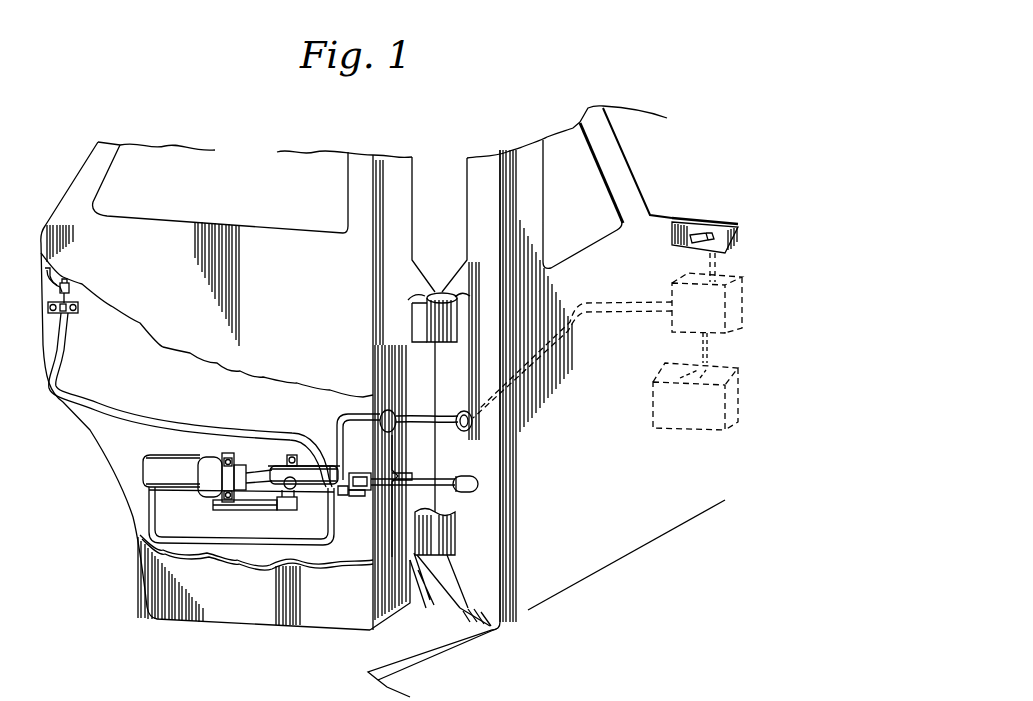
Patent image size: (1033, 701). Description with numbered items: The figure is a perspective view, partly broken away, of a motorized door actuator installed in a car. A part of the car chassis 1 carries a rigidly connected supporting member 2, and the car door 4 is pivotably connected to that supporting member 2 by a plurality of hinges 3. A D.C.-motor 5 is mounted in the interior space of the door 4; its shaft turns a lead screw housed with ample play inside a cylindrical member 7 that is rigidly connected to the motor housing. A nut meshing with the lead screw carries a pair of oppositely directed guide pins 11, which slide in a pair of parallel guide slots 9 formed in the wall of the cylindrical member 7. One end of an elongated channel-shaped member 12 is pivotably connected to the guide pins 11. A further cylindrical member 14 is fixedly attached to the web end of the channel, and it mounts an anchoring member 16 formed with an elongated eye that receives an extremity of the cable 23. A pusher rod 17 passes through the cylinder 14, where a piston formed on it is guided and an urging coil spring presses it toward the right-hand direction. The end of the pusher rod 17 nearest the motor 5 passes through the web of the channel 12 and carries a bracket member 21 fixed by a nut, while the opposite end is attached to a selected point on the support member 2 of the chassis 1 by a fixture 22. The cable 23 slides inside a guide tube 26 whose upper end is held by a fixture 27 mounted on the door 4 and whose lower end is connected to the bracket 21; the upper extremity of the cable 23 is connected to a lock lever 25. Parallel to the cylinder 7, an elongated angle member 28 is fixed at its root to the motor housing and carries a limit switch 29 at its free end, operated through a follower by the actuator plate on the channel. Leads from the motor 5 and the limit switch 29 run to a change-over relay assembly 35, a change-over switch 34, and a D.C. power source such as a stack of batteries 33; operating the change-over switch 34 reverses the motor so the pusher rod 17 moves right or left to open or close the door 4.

The car chassis 1 is at (597, 123).
The supporting member 2 is at (478, 185).
The hinges 3 is at (438, 297).
The car door 4 is at (178, 232).
The D.C.-motor 5 is at (153, 458).
The cylindrical member 7 is at (242, 478).
The guide slots 9 is at (253, 474).
The guide pins 11 is at (276, 470).
The channel-shaped member 12 is at (325, 472).
The cylindrical member 14 is at (360, 473).
The anchoring member 16 is at (363, 496).
The pusher rod 17 is at (420, 480).
The bracket member 21 is at (341, 495).
The fixture 22 is at (463, 478).
The cable 23 is at (67, 298).
The lock lever 25 is at (53, 277).
The guide tube 26 is at (107, 400).
The fixture 27 is at (68, 315).
The angle member 28 is at (242, 510).
The limit switch 29 is at (293, 507).
The batteries 33 is at (668, 407).
The change-over switch 34 is at (675, 237).
The change-over relay assembly 35 is at (687, 317).